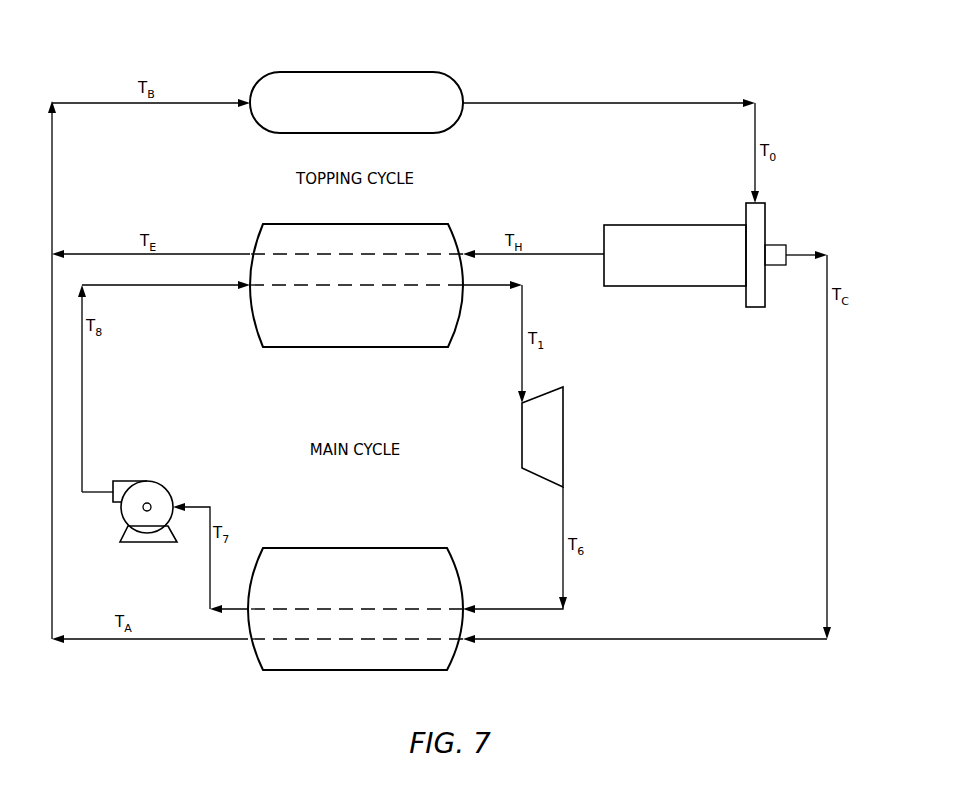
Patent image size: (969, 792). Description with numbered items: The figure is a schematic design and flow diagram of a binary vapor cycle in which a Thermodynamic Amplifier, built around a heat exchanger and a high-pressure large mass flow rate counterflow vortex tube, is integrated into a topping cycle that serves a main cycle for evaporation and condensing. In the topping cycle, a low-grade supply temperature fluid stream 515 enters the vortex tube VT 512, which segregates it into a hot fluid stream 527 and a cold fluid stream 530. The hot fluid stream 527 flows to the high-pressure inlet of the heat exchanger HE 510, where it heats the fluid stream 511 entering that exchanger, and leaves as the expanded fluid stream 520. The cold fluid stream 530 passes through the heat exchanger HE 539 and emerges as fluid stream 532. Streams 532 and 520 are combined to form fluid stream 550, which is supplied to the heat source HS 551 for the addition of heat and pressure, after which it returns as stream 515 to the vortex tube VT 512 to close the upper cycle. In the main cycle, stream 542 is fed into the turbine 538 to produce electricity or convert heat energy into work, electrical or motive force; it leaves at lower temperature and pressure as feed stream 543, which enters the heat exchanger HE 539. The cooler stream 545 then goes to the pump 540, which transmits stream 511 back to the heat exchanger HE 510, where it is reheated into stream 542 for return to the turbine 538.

The heat exchanger HE 510 is at (252, 313).
The fluid stream T8 511 is at (83, 378).
The vortex tube VT 512 is at (685, 224).
The fluid stream TO 515 is at (712, 100).
The expanded fluid stream TE 520 is at (220, 252).
The hot fluid stream TH 527 is at (554, 252).
The cold fluid stream TC 530 is at (775, 640).
The fluid stream TA 532 is at (98, 640).
The turbine 538 is at (565, 437).
The heat exchanger HE 539 is at (344, 670).
The pump 540 is at (130, 481).
The fluid stream T1 542 is at (521, 358).
The feed stream T6 543 is at (510, 608).
The fluid stream T7 545 is at (208, 568).
The fluid stream TB 550 is at (211, 100).
The heat source HS 551 is at (346, 72).